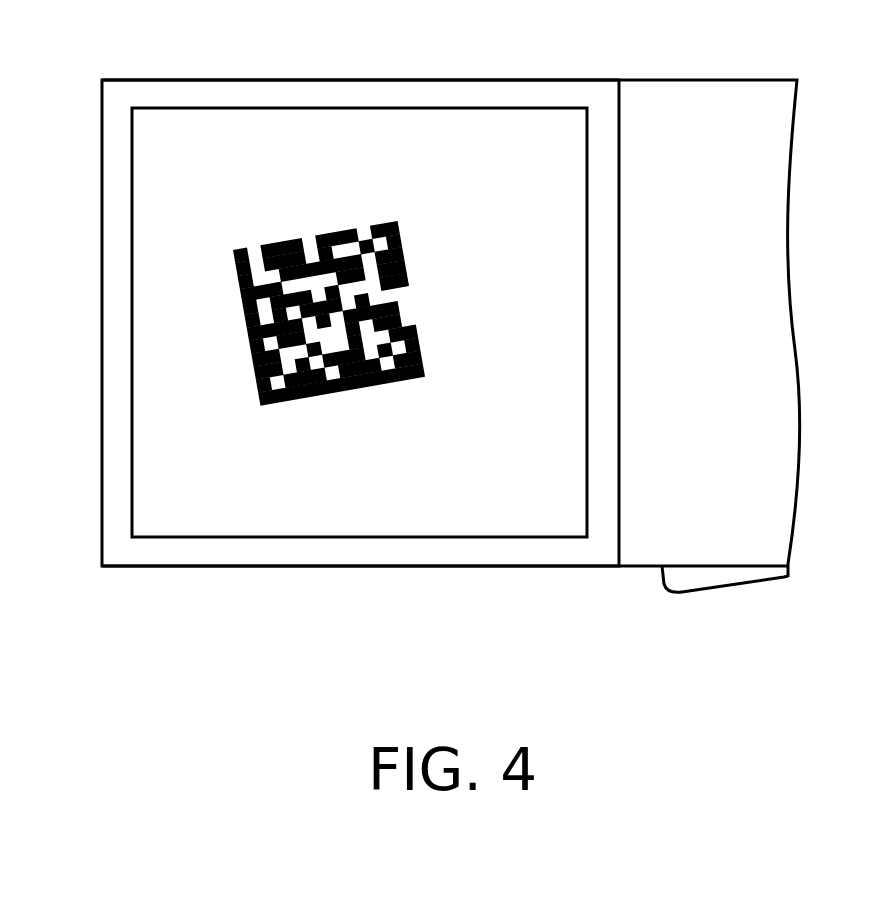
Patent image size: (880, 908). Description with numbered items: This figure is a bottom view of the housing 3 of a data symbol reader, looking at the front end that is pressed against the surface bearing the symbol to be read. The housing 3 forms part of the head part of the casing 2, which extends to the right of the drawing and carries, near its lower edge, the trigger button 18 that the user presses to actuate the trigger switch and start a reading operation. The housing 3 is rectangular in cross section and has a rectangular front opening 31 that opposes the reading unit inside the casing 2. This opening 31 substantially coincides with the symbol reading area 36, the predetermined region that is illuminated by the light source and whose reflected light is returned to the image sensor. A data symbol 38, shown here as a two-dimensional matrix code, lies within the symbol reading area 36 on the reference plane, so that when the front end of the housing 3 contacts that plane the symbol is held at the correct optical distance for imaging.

The casing 2 is at (715, 100).
The housing 3 is at (304, 566).
The trigger button 18 is at (708, 577).
The opening 31 is at (165, 470).
The symbol reading area 36 is at (423, 125).
The data symbol 38 is at (252, 343).